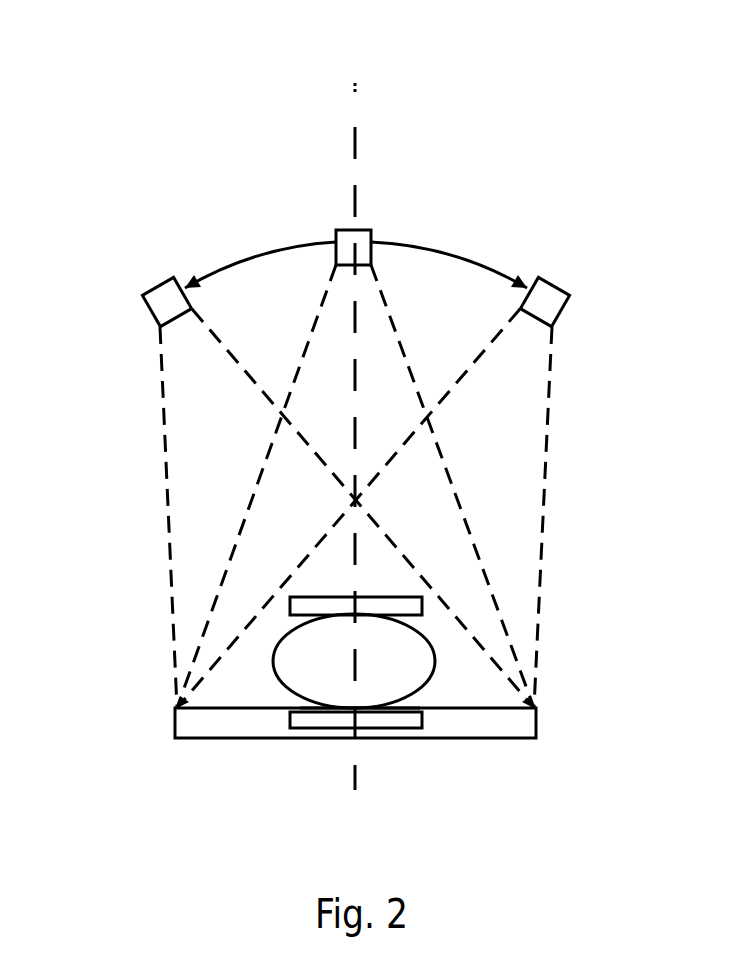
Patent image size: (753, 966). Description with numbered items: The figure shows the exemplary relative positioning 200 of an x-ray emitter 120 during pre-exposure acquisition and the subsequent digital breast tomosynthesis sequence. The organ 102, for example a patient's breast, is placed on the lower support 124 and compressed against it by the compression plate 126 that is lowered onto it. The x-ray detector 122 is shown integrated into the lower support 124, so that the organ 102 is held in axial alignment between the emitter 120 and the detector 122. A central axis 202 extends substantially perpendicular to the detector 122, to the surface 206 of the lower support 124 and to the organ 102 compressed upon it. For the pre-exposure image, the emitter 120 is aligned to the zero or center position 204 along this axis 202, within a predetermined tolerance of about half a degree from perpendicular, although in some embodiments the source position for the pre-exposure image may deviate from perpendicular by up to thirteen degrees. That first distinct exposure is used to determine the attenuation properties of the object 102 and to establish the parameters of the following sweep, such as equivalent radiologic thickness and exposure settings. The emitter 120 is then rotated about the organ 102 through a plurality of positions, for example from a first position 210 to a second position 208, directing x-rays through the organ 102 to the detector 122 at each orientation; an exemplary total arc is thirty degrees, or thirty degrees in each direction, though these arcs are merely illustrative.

The relative positioning 200 is at (584, 113).
The axis 202 is at (358, 88).
The center position 204 is at (372, 258).
The x-ray emitter 120 is at (338, 232).
The start position of the sweep 210 is at (150, 310).
The end position of the sweep 208 is at (565, 308).
The x-ray detector 122 is at (537, 716).
The surface 206 is at (470, 712).
The lower support 124 is at (290, 722).
The compression plate 126 is at (352, 598).
The organ 102 is at (290, 662).